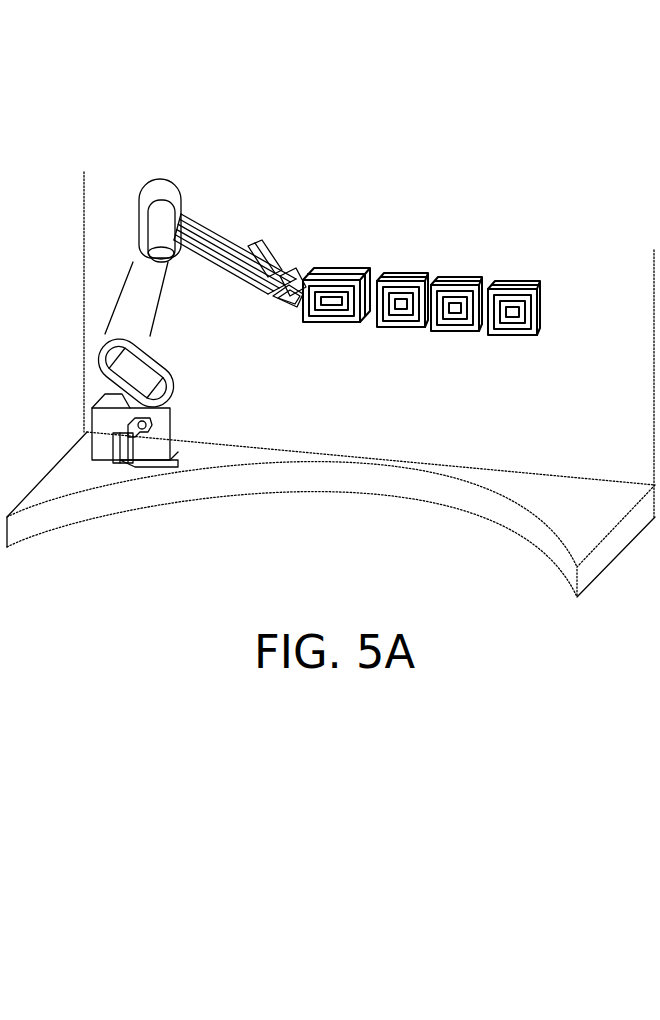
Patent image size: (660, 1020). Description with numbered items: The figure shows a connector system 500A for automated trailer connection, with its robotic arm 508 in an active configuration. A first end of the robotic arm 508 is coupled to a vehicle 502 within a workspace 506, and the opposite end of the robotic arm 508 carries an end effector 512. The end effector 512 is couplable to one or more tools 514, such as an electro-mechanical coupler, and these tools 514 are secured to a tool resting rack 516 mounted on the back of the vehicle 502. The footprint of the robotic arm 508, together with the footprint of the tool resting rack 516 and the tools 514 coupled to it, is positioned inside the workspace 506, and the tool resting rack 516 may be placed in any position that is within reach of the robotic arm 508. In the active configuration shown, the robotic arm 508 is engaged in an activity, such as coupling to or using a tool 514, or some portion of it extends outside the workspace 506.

The connector system 500A is at (336, 141).
The vehicle 502 is at (576, 232).
The workspace 506 is at (548, 500).
The robotic arm 508 is at (213, 225).
The end effector 512 is at (333, 272).
The tools 514 is at (398, 332).
The tool resting rack 516 is at (545, 293).